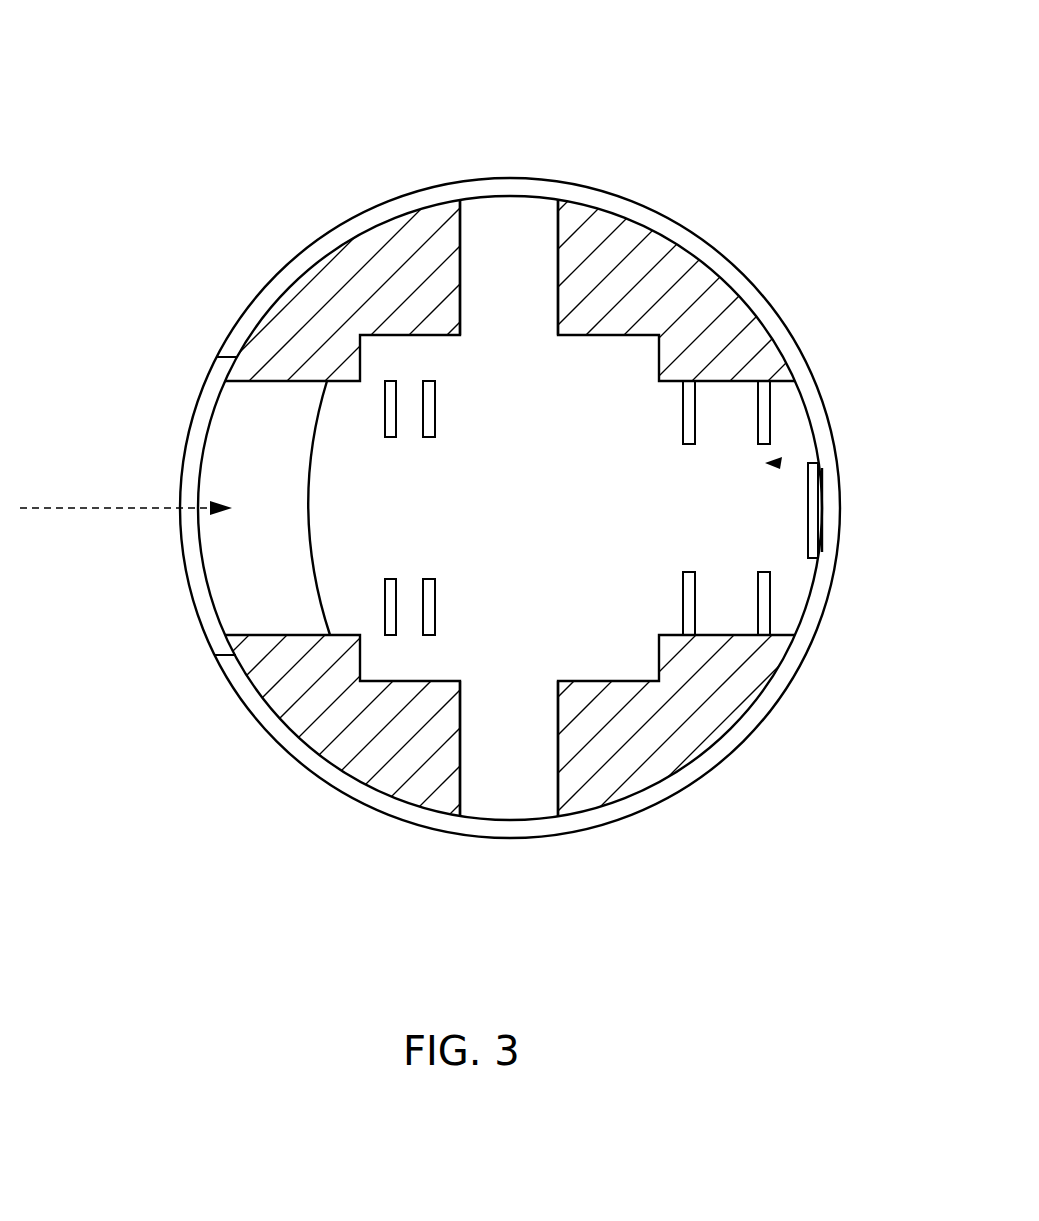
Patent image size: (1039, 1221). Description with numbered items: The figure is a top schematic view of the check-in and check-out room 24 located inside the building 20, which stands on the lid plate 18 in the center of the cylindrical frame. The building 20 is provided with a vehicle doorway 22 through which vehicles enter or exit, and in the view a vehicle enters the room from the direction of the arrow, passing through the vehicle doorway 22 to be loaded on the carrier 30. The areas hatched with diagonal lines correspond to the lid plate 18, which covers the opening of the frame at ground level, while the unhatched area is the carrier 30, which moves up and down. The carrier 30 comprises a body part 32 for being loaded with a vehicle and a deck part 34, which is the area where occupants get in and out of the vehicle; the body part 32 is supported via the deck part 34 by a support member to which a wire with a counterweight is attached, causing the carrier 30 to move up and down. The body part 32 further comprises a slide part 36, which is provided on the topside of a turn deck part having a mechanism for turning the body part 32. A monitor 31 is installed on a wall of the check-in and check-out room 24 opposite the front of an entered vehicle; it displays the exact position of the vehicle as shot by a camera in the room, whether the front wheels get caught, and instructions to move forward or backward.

The lid plate 18 is at (328, 287).
The building 20 is at (728, 147).
The vehicle doorway 22 is at (210, 393).
The check-in and check-out room 24 is at (748, 303).
The carrier 30 is at (779, 462).
The monitor 31 is at (813, 503).
The body part 32 is at (233, 547).
The deck part 34 is at (510, 235).
The slide part 36 is at (790, 573).